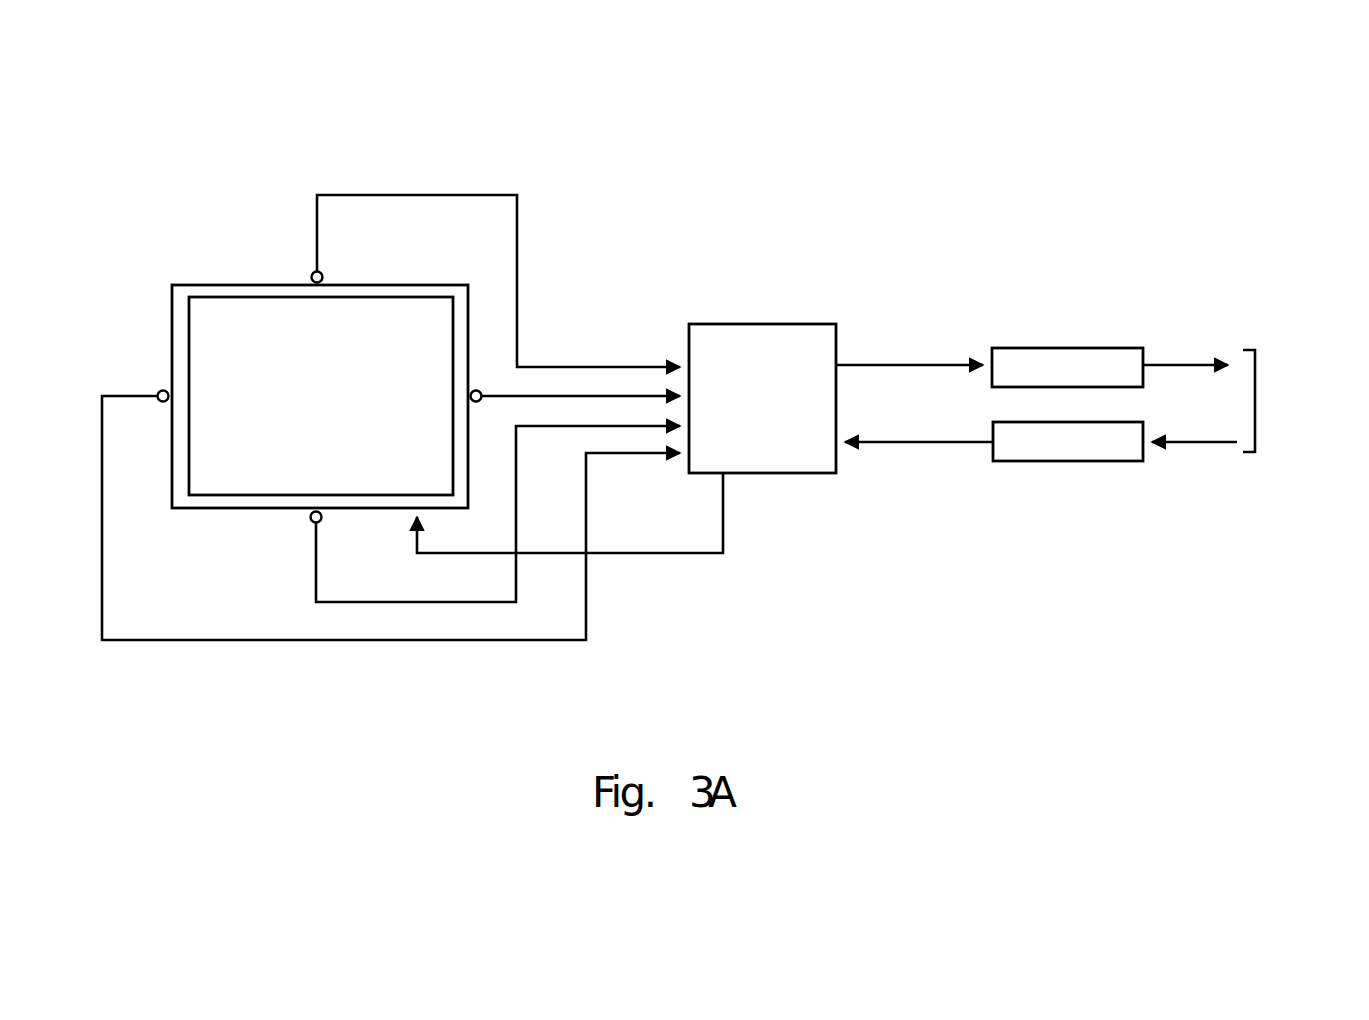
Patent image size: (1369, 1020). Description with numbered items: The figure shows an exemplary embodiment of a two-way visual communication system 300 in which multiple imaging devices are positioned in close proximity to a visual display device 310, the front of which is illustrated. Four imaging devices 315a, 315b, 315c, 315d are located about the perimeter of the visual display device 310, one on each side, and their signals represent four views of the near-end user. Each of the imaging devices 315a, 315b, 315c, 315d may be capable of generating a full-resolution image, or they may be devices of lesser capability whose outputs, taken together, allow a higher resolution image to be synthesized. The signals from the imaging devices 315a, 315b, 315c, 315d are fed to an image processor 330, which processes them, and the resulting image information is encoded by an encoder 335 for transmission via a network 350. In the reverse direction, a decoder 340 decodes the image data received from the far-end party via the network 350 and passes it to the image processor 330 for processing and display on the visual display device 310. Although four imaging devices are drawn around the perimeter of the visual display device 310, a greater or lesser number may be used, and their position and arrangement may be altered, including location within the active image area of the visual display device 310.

The two-way visual communication system 300 is at (866, 105).
The visual display device 310 is at (177, 277).
The imaging device 315a is at (297, 273).
The imaging device 315b is at (483, 380).
The imaging device 315c is at (307, 528).
The imaging device 315d is at (158, 388).
The image processor 330 is at (626, 438).
The encoder 335 is at (1032, 367).
The decoder 340 is at (1041, 441).
The network 350 is at (1300, 401).